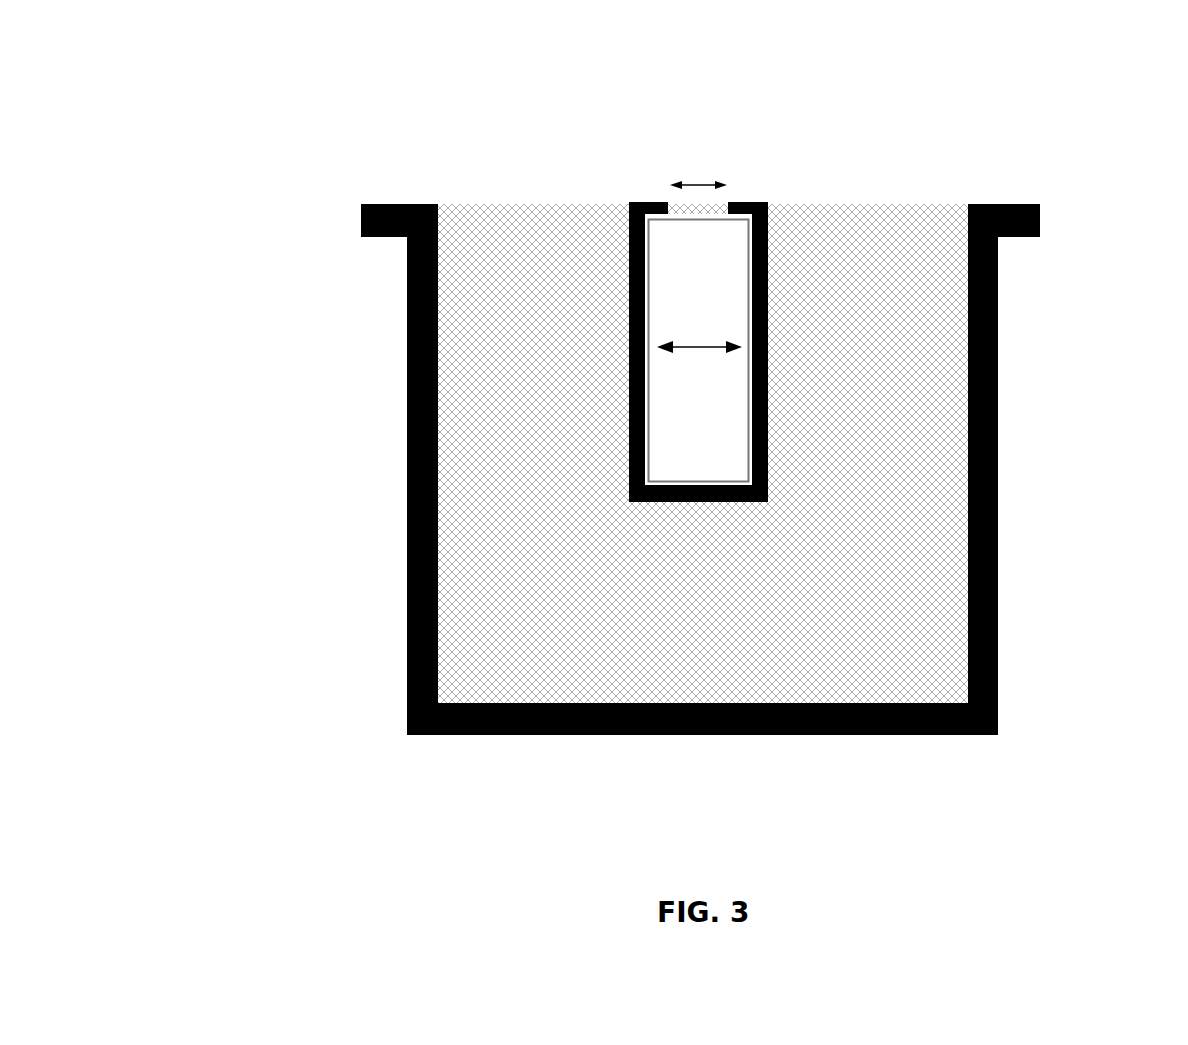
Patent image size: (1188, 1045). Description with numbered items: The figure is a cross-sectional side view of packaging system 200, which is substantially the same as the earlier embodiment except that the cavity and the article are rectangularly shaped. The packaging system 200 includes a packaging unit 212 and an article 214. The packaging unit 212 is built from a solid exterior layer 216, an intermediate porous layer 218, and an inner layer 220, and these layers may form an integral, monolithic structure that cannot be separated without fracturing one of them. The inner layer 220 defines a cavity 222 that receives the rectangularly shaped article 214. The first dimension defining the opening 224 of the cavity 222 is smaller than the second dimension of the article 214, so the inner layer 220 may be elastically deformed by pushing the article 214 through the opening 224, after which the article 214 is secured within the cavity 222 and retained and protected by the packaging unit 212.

The packaging system 200 is at (415, 125).
The packaging unit 212 is at (373, 684).
The article 214 is at (705, 469).
The solid exterior layer 216 is at (407, 478).
The intermediate porous layer 218 is at (893, 555).
The inner layer 220 is at (768, 387).
The cavity 222 is at (718, 215).
The opening 224 is at (683, 203).